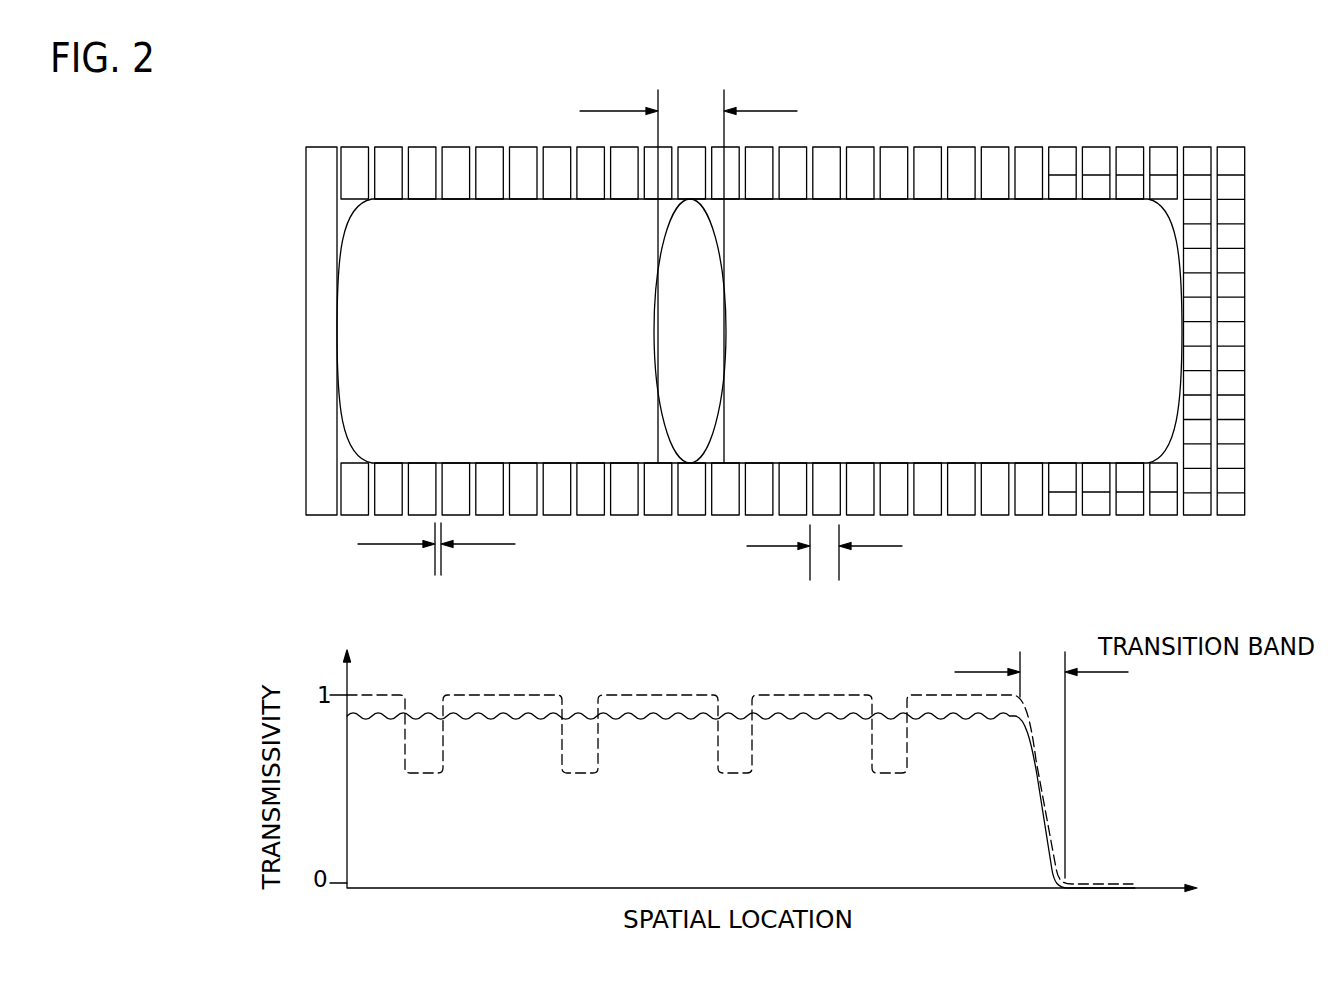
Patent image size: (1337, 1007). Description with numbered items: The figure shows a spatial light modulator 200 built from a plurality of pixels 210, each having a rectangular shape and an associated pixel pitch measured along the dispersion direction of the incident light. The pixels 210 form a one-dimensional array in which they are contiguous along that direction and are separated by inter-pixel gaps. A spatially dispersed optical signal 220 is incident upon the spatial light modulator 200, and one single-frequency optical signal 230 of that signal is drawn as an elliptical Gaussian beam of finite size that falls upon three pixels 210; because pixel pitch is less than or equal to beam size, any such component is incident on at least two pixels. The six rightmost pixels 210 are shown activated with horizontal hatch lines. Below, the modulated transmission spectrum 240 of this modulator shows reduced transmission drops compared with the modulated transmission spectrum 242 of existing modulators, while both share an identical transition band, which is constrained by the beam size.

The spatial light modulator 200 is at (112, 117).
The pixel 210 is at (323, 155).
The spatially dispersed optical signal 220 is at (350, 405).
The single-frequency optical signal 230 is at (668, 437).
The modulated transmission spectrum 240 is at (502, 717).
The modulated transmission spectrum 242 is at (578, 774).